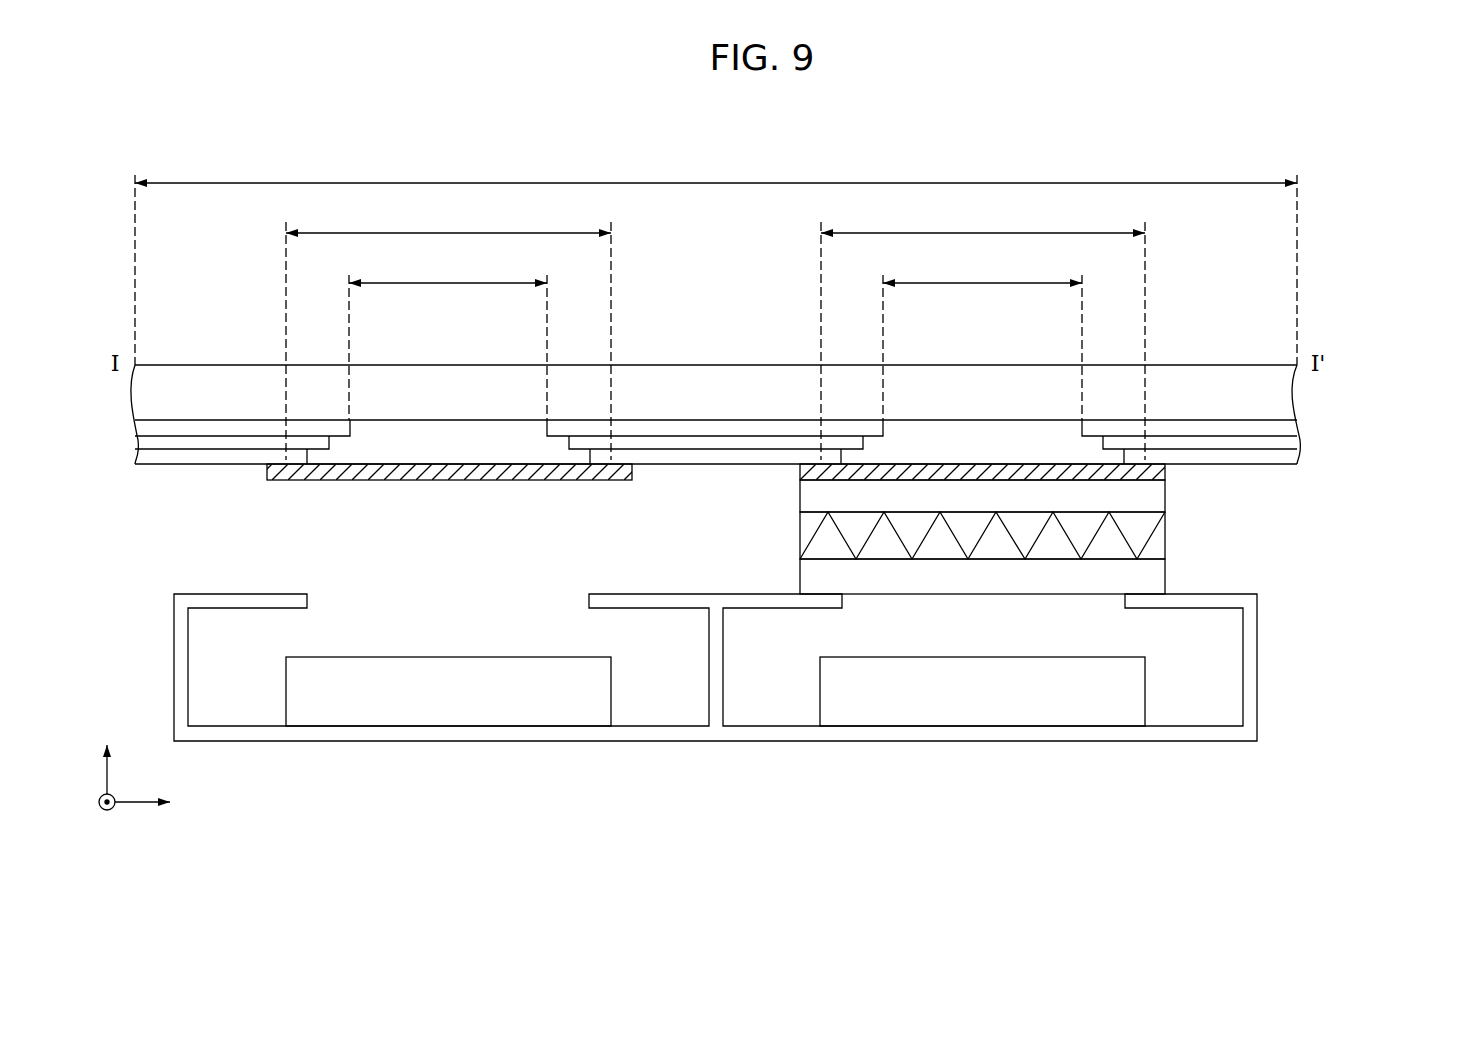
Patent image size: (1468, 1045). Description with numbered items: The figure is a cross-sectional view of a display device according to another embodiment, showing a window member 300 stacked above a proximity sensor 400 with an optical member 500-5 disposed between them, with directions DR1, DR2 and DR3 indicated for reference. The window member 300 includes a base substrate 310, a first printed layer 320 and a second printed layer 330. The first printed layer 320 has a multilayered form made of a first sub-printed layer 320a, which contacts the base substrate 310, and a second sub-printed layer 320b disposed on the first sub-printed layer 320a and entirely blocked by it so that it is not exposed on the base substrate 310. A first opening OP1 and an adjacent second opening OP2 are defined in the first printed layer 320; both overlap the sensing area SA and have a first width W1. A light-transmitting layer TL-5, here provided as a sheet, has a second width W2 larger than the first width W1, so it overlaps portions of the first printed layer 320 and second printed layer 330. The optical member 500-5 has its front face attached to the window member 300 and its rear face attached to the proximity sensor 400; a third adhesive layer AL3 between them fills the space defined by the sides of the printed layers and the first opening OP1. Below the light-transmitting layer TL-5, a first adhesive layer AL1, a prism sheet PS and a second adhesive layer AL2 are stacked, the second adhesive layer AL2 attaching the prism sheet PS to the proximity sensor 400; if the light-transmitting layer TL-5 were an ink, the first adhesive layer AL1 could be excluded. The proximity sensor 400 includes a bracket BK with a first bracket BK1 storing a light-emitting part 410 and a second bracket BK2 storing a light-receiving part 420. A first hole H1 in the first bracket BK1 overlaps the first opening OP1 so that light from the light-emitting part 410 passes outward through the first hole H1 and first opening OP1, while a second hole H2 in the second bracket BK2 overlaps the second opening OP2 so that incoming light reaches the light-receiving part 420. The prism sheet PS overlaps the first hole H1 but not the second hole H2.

The window member 300 is at (793, 365).
The base substrate 310 is at (1285, 393).
The first printed layer 320 is at (795, 423).
The first sub-printed layer 320a is at (1291, 441).
The second sub-printed layer 320b is at (1291, 428).
The second printed layer 330 is at (1291, 455).
The first opening OP1 is at (958, 418).
The second opening OP2 is at (422, 418).
The third adhesive layer AL3 is at (476, 443).
The first width W1 is at (715, 269).
The second width W2 is at (715, 219).
The sensing area SA is at (716, 170).
The optical member 500-5 is at (756, 529).
The light-transmitting layer TL-5 is at (266, 468).
The first adhesive layer AL1 is at (1167, 496).
The prism sheet PS is at (1167, 540).
The second adhesive layer AL2 is at (1025, 576).
The proximity sensor 400 is at (773, 682).
The bracket BK is at (1191, 746).
The first bracket BK1 is at (918, 733).
The second bracket BK2 is at (383, 733).
The light-emitting part 410 is at (987, 708).
The light-receiving part 420 is at (450, 708).
The first hole H1 is at (999, 613).
The second hole H2 is at (339, 590).
The first direction DR1 is at (165, 803).
The second direction DR2 is at (107, 817).
The third direction DR3 is at (107, 755).